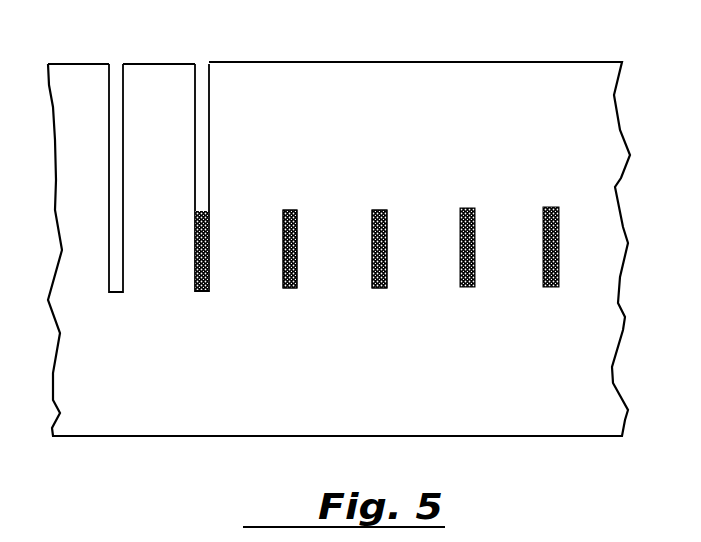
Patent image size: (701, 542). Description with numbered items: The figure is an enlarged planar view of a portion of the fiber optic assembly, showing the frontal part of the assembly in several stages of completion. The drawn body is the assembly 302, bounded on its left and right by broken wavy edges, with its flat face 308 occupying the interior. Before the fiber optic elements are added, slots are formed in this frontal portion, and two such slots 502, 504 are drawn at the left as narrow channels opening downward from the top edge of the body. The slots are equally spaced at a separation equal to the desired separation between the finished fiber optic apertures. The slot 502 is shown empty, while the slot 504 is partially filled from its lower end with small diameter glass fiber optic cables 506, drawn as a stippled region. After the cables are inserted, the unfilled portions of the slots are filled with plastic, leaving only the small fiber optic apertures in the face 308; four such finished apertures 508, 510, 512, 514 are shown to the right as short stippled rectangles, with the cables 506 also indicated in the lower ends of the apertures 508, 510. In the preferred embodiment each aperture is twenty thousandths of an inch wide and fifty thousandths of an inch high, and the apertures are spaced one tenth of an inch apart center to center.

The substrate 302 is at (428, 61).
The face 308 is at (527, 88).
The slot 502 is at (123, 266).
The slot 504 is at (195, 196).
The fiber optic cables 506 is at (202, 293).
The fiber optic aperture 508 is at (298, 227).
The fiber optic aperture 510 is at (387, 232).
The fiber optic aperture 512 is at (475, 232).
The fiber optic aperture 514 is at (558, 235).